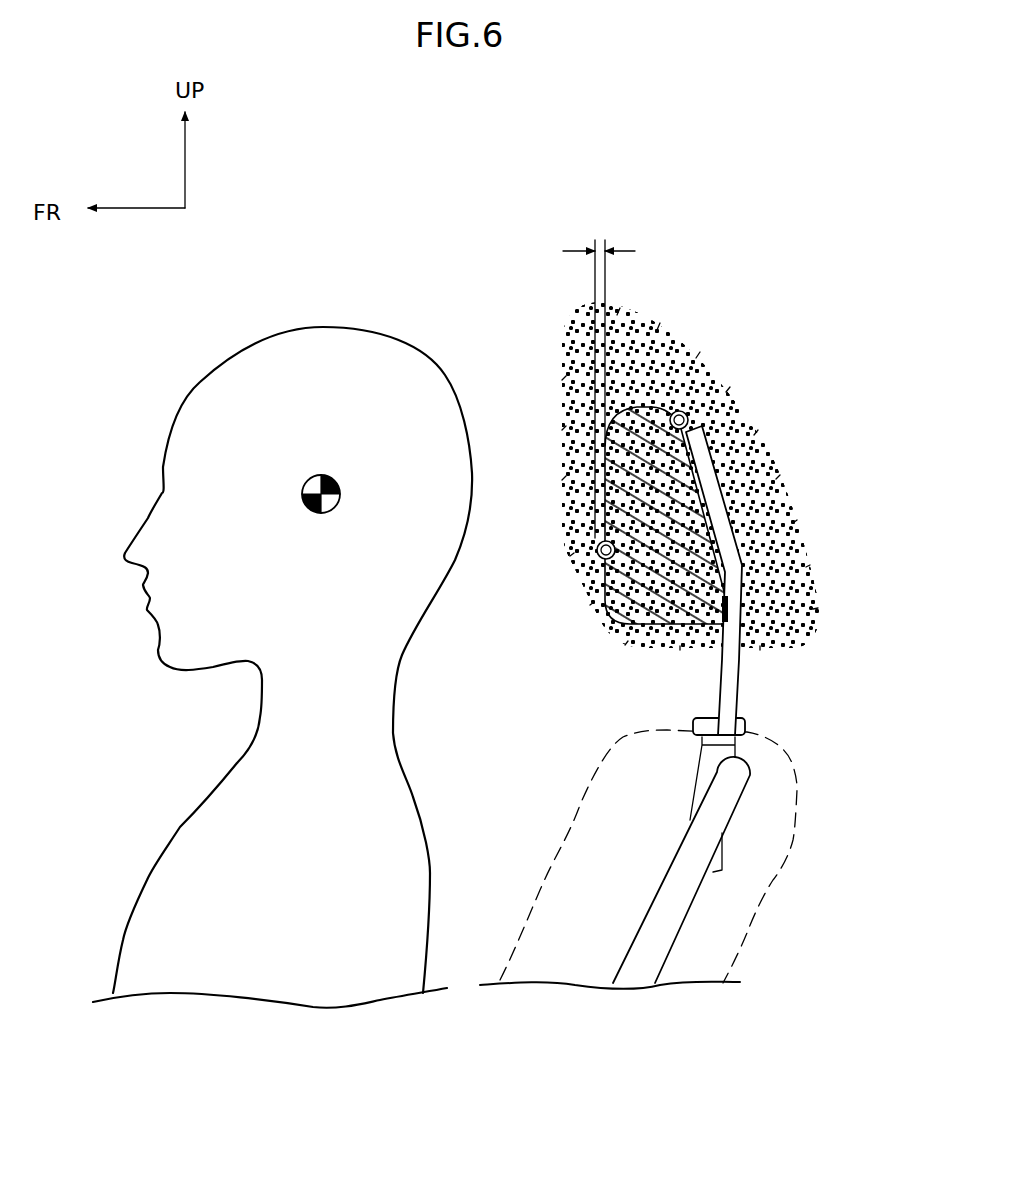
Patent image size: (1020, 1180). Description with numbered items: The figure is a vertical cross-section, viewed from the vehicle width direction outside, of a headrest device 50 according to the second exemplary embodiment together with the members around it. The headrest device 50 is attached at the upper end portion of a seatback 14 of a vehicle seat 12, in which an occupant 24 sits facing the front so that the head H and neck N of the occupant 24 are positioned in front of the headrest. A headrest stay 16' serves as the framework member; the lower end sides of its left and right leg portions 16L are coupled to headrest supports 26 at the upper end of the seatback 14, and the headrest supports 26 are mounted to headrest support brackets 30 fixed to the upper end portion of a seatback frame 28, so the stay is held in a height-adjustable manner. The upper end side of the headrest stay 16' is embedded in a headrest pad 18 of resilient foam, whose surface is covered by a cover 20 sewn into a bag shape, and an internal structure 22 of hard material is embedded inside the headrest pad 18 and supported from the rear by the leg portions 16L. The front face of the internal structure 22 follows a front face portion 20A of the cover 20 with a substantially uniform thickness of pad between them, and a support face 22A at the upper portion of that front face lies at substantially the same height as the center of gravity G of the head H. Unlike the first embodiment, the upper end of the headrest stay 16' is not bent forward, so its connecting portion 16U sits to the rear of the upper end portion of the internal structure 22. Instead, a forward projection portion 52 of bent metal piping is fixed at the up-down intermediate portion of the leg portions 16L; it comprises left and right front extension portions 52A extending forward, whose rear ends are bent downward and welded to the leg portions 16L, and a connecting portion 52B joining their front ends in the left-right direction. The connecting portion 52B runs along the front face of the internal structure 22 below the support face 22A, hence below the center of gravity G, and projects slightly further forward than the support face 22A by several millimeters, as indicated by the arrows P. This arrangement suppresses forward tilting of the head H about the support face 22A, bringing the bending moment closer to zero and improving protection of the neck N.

The vehicle seat 12 is at (685, 839).
The seatback 14 is at (773, 880).
The headrest stay 16' is at (755, 512).
The connecting portion 16U is at (686, 414).
The leg portions 16L is at (720, 687).
The headrest pad 18 is at (757, 500).
The cover 20 is at (817, 563).
The front face portion 20A is at (562, 528).
The internal structure 22 is at (632, 420).
The support face 22A is at (607, 473).
The occupant 24 is at (153, 867).
The headrest supports 26 is at (743, 723).
The seatback frame 28 is at (643, 917).
The headrest support brackets 30 is at (697, 768).
The headrest device 50 is at (683, 447).
The forward projection portion 52 is at (590, 617).
The front extension portions 52A is at (623, 640).
The connecting portion 52B is at (603, 555).
The head H is at (200, 382).
The center of gravity G is at (313, 478).
The neck N is at (260, 710).
The arrows P is at (599, 250).